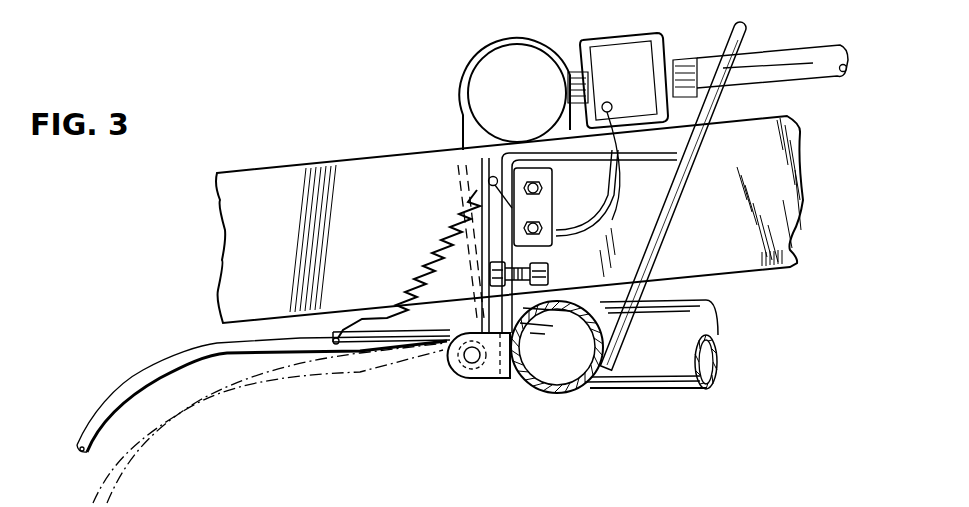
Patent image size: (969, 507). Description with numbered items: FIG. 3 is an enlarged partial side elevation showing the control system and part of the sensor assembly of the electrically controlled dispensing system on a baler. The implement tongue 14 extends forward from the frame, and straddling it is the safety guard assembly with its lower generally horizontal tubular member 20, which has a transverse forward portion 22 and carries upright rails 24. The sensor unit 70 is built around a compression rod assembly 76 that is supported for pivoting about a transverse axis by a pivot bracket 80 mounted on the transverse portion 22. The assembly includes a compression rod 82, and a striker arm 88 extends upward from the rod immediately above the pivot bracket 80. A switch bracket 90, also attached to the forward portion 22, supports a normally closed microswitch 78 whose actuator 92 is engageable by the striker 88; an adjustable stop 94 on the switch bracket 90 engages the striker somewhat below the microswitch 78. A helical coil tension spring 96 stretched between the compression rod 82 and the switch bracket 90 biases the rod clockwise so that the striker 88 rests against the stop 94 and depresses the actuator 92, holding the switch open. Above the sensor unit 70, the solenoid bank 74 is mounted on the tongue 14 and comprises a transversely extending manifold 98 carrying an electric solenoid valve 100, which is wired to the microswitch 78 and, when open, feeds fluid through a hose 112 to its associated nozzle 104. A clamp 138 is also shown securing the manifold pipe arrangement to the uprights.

The implement tongue 14 is at (266, 250).
The lower generally horizontal tubular member 20 is at (626, 394).
The transverse forward portion 22 is at (548, 388).
The upright rails 24 is at (712, 108).
The sensor unit 70 is at (170, 432).
The solenoid bank 74 is at (447, 52).
The compression rod assembly 76 is at (130, 376).
The microswitch 78 is at (538, 214).
The pivot bracket 80 is at (470, 380).
The compression rod 82 is at (217, 350).
The striker arm 88 is at (478, 311).
The switch bracket 90 is at (650, 145).
The actuator 92 is at (490, 191).
The adjustable stop 94 is at (490, 275).
The helical coil tension spring 96 is at (413, 247).
The manifold 98 is at (487, 110).
The electric solenoid valve 100 is at (594, 84).
The nozzle 104 is at (270, 503).
The hose 112 is at (820, 78).
The clamp 138 is at (460, 119).